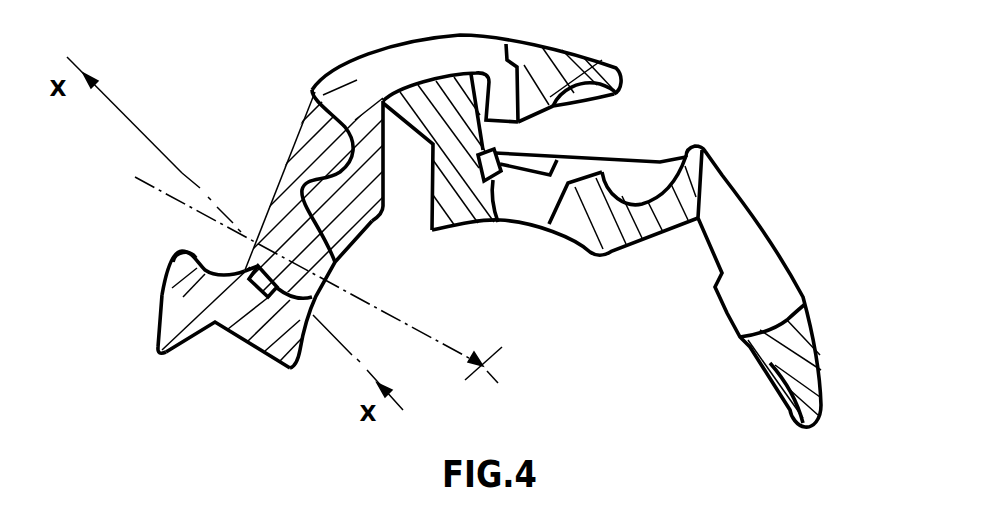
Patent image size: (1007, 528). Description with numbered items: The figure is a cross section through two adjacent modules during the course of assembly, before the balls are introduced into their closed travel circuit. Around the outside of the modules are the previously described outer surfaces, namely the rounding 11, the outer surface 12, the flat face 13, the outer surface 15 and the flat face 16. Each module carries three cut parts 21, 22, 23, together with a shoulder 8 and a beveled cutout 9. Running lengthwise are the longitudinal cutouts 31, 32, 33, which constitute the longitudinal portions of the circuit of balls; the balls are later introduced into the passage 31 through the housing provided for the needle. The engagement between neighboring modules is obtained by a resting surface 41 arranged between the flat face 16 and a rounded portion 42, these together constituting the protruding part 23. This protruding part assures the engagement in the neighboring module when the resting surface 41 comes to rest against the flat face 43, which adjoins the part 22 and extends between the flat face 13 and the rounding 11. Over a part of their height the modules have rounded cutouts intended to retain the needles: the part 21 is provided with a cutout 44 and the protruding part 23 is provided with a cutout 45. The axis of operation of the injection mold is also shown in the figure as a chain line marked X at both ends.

The shoulder 8 is at (510, 44).
The beveled cutout 9 is at (481, 70).
The rounding 11 is at (820, 370).
The outer surface 12 is at (574, 242).
The flat face 13 is at (670, 233).
The outer surface 15 is at (591, 152).
The flat face 16 is at (426, 190).
The cut part 21 is at (518, 120).
The cut part 22 is at (318, 196).
The protruding part 23 is at (187, 290).
The longitudinal cutout 31 is at (332, 262).
The longitudinal cutout 32 is at (583, 90).
The longitudinal cutout 33 is at (648, 172).
The resting surface 41 is at (180, 353).
The rounded portion 42 is at (150, 302).
The flat face 43 is at (357, 80).
The cutout 44 is at (777, 325).
The cutout 45 is at (203, 249).